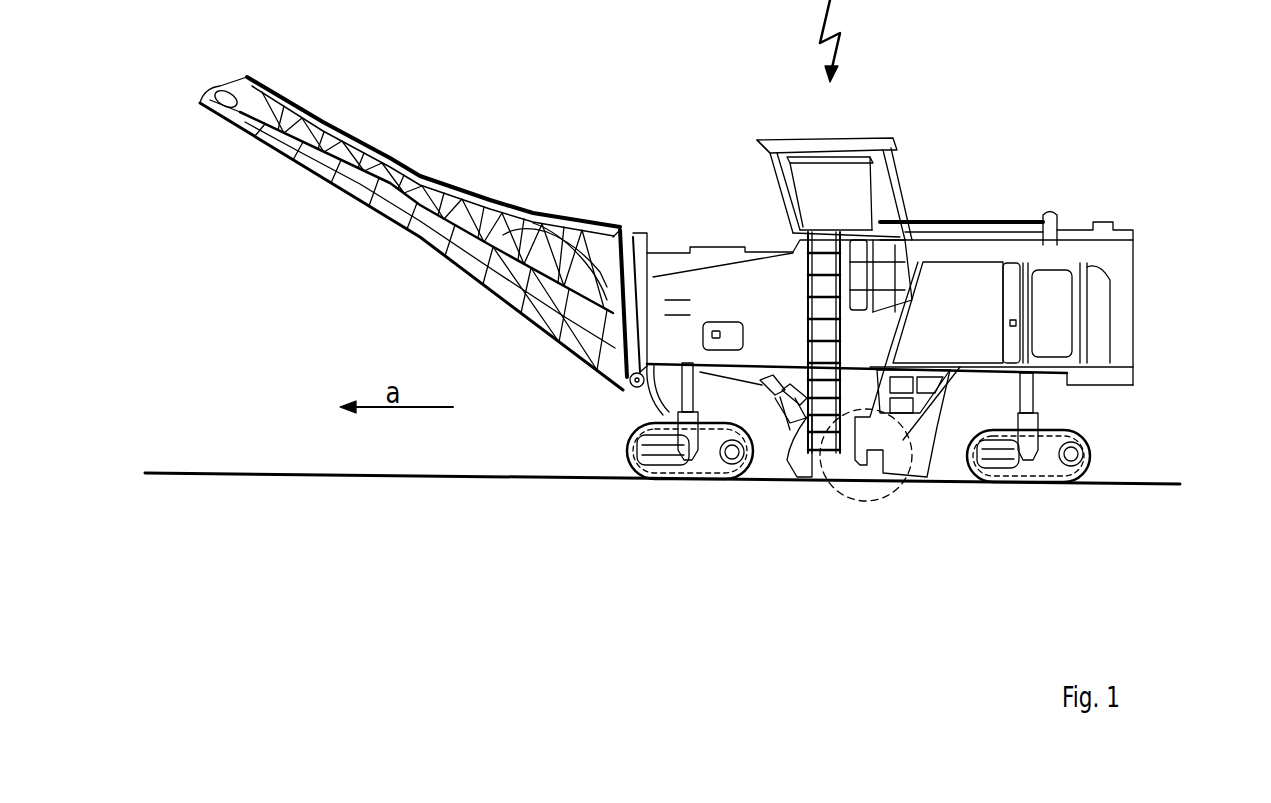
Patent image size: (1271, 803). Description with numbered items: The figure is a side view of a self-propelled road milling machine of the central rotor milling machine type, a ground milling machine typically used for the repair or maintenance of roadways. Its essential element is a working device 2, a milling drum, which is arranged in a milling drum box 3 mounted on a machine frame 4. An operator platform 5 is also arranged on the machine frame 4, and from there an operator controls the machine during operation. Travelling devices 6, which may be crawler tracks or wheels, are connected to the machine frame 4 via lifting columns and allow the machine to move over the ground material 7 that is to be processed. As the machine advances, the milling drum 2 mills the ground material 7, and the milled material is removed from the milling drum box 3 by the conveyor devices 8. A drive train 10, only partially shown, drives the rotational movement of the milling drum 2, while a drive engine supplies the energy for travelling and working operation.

The working device 2 is at (884, 437).
The milling drum box 3 is at (823, 430).
The machine frame 4 is at (877, 323).
The operator platform 5 is at (820, 185).
The travelling devices 6 is at (700, 460).
The ground material 7 is at (1063, 483).
The conveyor devices 8 is at (408, 166).
The drive train 10 is at (887, 437).